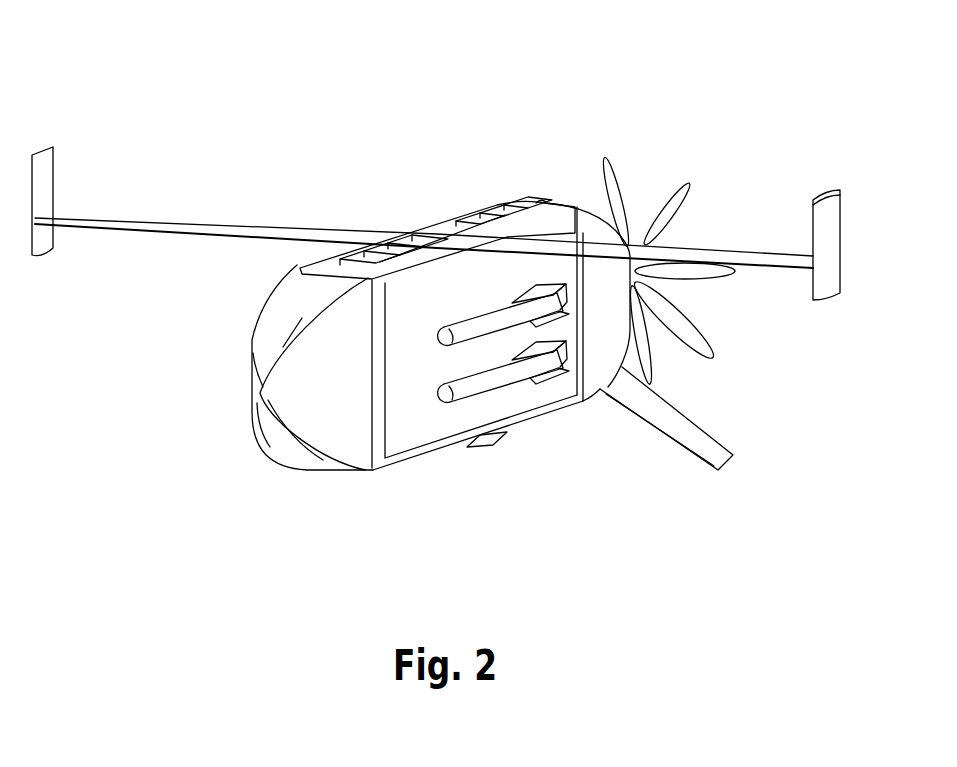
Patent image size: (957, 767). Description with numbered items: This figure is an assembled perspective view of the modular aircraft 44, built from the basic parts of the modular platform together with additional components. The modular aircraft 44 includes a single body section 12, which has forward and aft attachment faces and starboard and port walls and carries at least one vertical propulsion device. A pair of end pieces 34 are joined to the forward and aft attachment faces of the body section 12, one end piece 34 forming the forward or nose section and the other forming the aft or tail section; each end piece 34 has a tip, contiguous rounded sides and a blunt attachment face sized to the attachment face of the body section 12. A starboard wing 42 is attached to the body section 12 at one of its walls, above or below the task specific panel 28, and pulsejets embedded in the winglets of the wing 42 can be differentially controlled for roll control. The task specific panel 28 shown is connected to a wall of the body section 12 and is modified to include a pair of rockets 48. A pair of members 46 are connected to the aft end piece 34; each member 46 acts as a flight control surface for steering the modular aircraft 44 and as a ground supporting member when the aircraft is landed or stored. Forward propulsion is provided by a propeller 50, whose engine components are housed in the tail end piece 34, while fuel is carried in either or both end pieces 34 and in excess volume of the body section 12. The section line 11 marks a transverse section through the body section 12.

The assembled modular aircraft 44 is at (219, 111).
The starboard wing 42 is at (167, 220).
The body section 12 is at (468, 217).
The end piece 34 is at (587, 227).
The task specific panel 28 is at (417, 403).
The rockets 48 is at (477, 328).
The members 46 is at (623, 388).
The propeller 50 is at (680, 200).
The section line 11- 11 is at (297, 265).